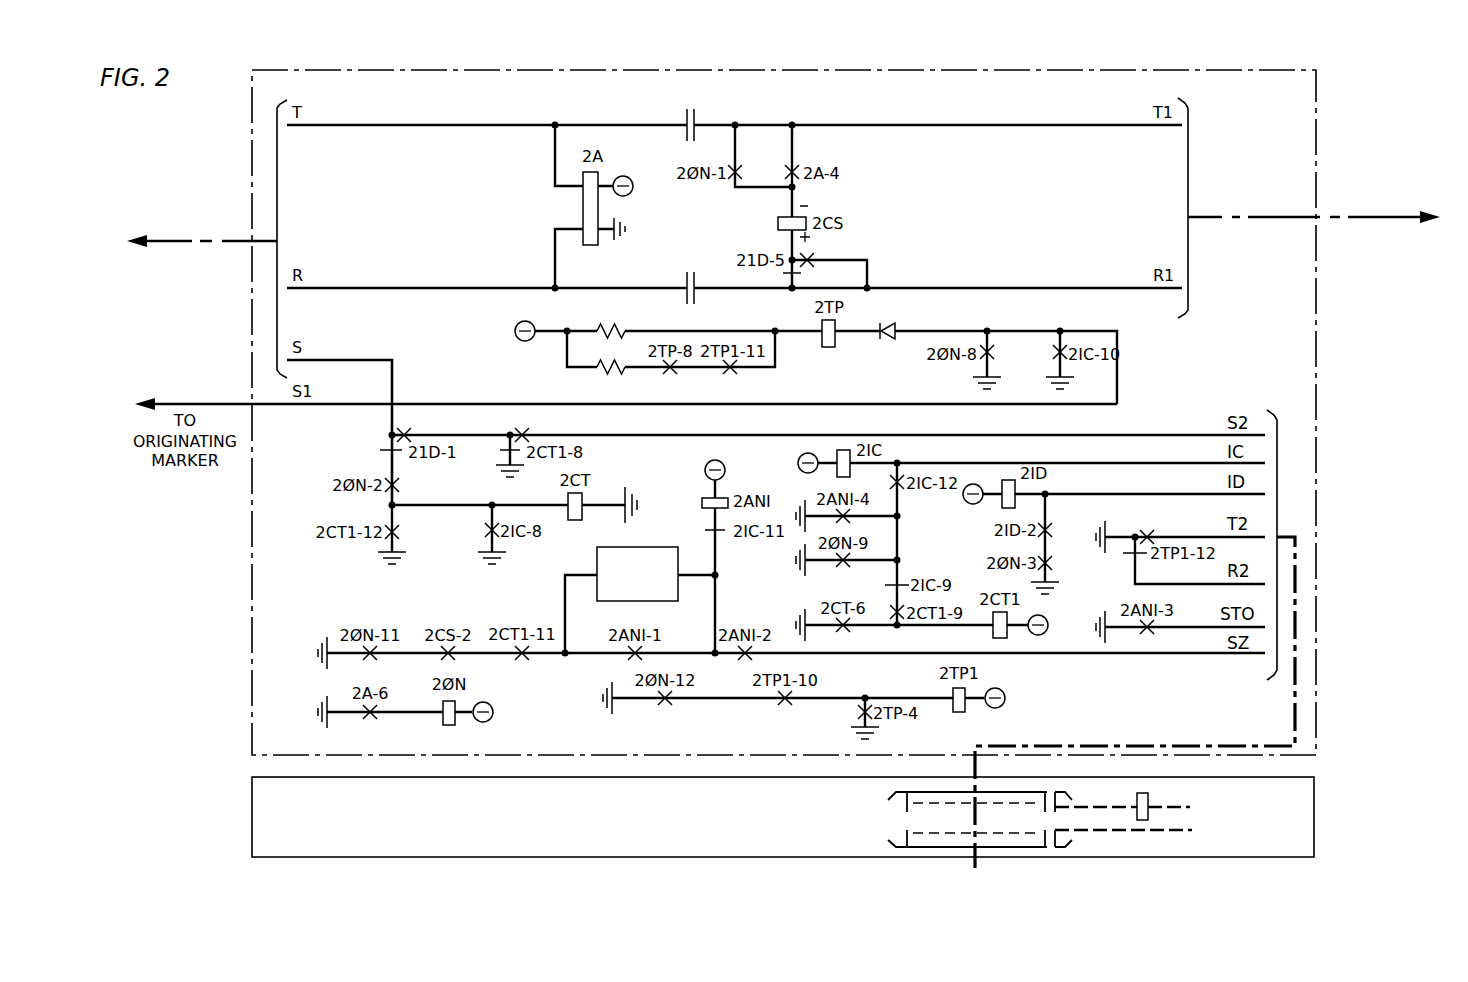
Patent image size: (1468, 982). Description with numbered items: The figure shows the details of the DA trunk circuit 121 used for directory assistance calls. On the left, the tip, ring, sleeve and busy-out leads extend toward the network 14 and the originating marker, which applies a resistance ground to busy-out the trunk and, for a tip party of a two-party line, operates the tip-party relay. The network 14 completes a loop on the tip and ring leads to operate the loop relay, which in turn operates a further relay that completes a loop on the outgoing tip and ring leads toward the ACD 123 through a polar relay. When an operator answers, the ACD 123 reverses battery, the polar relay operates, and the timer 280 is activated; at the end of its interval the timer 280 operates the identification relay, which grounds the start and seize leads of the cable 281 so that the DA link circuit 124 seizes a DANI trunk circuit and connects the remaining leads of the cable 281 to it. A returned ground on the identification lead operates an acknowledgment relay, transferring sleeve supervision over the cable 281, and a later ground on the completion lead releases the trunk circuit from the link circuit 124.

The DA trunk circuit 121 is at (254, 133).
The network 14 is at (202, 271).
The automatic call distributor 123 is at (1314, 240).
The directory assistance link circuit 124 is at (253, 809).
The 0.8-second timer 280 is at (638, 550).
The cable 281 is at (1197, 748).